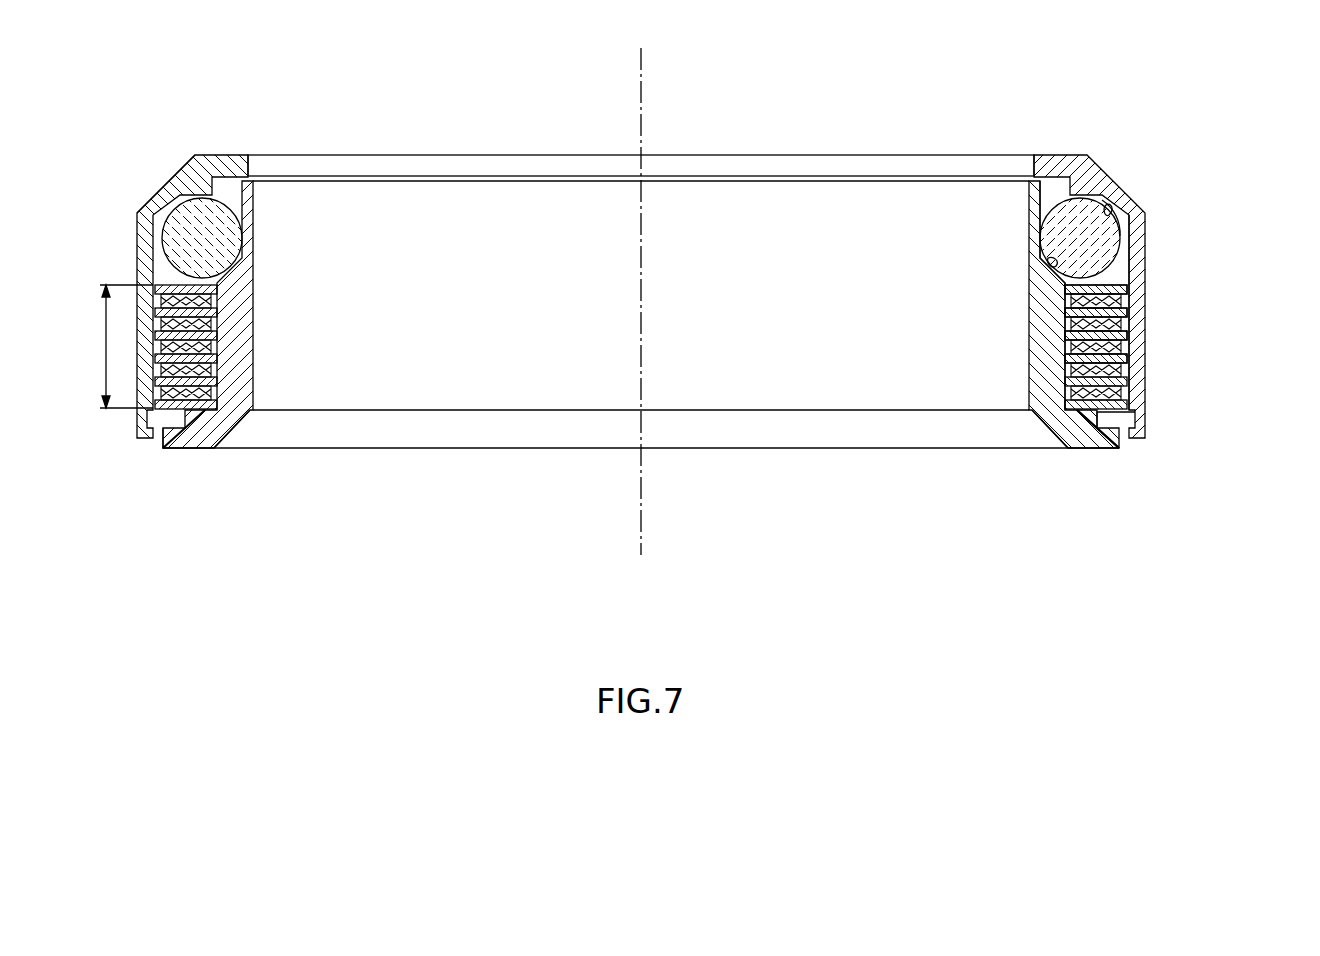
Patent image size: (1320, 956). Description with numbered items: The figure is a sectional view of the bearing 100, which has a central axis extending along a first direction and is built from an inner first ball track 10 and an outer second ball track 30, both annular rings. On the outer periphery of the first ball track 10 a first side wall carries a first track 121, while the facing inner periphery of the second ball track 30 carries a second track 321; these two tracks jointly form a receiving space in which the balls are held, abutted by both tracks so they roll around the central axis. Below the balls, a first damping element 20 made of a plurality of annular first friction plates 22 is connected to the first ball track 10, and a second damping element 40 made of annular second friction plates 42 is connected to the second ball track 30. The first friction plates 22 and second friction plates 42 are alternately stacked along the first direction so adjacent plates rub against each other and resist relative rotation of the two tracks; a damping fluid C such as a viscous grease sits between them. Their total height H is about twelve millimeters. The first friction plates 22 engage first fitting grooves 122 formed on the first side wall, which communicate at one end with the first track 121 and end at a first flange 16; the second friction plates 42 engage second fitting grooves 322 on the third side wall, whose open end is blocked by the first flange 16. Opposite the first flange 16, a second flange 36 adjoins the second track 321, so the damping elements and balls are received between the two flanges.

The bearing 100 is at (1052, 95).
The first ball track 10 is at (613, 344).
The first track 121 is at (1063, 258).
The first fitting grooves 122 is at (1095, 422).
The first flange 16 is at (163, 447).
The first damping element 20 is at (641, 347).
The first friction plates 22 is at (1066, 300).
The second ball track 30 is at (686, 304).
The second flange 36 is at (179, 207).
The second track 321 is at (1112, 213).
The second fitting grooves 322 is at (1133, 378).
The second damping element 40 is at (1177, 284).
The second friction plates 42 is at (1110, 287).
The damping fluid C is at (1118, 400).
The total height H is at (117, 346).